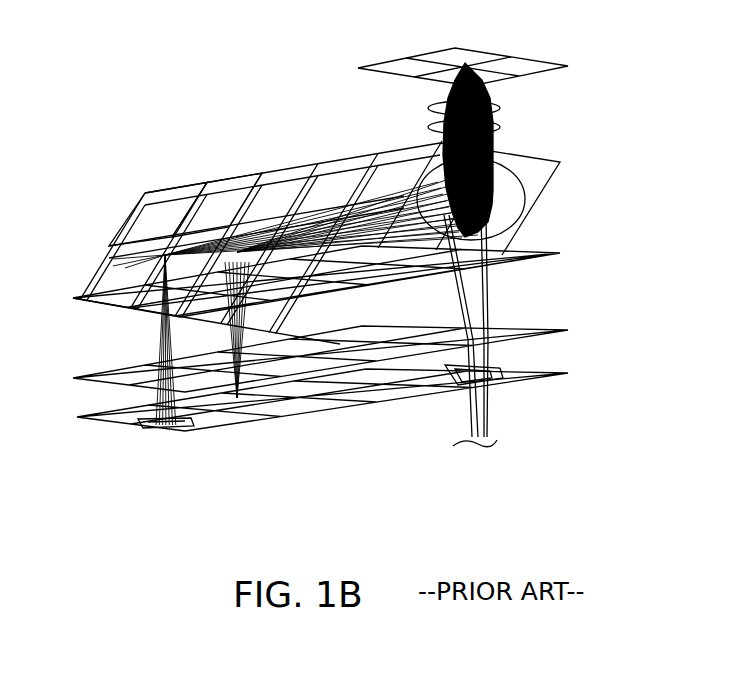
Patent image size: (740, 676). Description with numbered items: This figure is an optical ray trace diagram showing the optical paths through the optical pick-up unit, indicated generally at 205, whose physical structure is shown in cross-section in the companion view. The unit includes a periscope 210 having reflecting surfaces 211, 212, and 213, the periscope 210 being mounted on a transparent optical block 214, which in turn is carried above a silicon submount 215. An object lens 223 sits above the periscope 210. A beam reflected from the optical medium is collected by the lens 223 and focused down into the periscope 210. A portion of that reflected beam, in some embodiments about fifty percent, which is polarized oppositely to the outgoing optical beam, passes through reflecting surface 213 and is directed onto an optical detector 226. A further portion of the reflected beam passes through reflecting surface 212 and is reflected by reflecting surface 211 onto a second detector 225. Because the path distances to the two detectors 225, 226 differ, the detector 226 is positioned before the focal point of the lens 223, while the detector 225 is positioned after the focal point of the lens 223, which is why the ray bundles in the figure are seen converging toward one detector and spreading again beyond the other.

The optical system (prior art) 205 is at (300, 150).
The periscope 210 is at (547, 188).
The reflecting surface 211 is at (130, 213).
The reflecting surface 212 is at (237, 178).
The reflecting surface 213 is at (520, 221).
The transparent optical block 214 is at (538, 290).
The silicon submount 215 is at (537, 378).
The object lens 223 is at (500, 118).
The detector 225 is at (157, 432).
The optical detector 226 is at (512, 360).